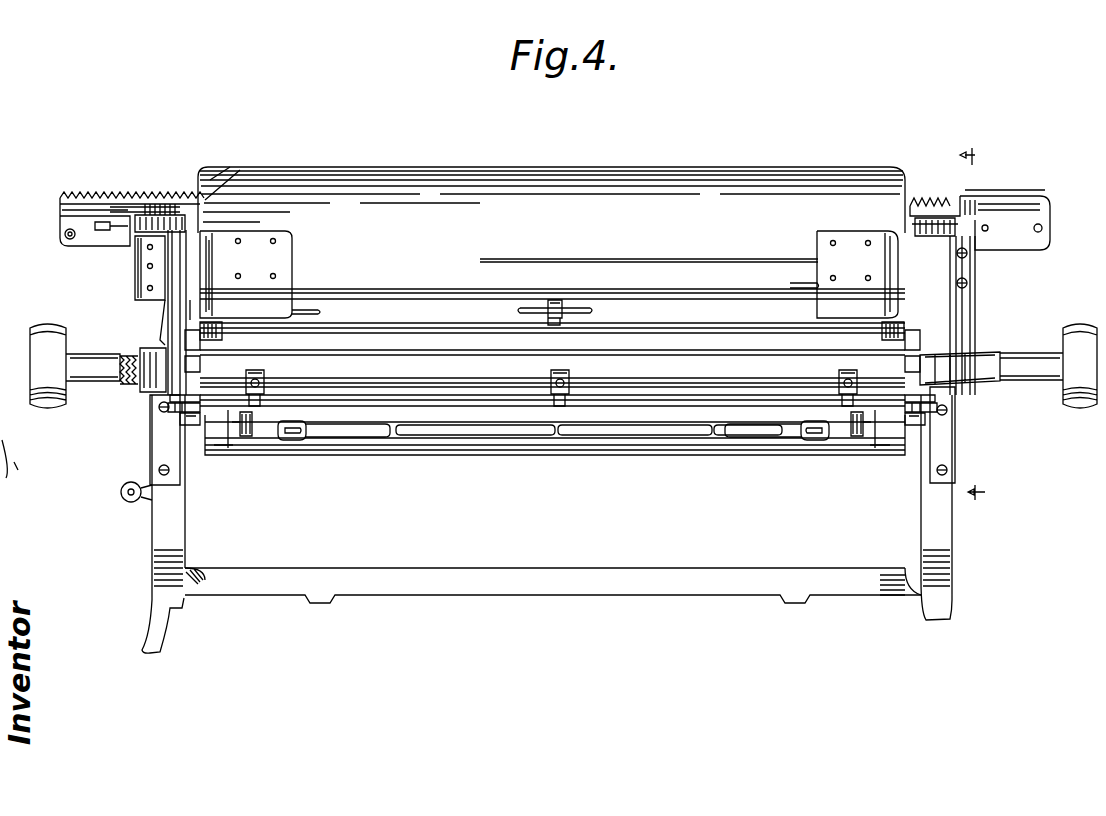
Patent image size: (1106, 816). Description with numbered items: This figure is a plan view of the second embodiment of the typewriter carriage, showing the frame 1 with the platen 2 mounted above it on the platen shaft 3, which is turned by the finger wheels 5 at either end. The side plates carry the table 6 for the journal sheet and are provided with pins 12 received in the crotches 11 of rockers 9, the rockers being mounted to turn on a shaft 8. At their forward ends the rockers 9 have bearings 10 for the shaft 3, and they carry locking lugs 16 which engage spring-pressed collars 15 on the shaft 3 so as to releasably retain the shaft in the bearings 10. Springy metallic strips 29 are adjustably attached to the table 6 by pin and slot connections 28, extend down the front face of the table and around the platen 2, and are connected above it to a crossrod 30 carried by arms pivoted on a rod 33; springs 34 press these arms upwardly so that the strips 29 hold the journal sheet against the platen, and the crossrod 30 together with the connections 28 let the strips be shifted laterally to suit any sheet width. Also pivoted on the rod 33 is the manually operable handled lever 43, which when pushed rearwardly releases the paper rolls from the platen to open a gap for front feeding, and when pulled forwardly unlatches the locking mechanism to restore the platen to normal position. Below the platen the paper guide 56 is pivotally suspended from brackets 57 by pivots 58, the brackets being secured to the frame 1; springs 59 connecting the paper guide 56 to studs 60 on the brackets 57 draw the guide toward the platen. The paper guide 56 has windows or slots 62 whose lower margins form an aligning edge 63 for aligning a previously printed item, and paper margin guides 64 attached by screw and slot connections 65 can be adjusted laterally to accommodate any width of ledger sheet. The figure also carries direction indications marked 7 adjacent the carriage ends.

The frame of the carriage 1 is at (505, 570).
The platen 2 is at (424, 338).
The platen shaft 3 is at (130, 358).
The finger wheels 5 is at (42, 325).
The table 6 is at (900, 487).
The direction 7 is at (972, 326).
The shaft 8 is at (134, 272).
The rockers 9 is at (165, 292).
The bearings 10 is at (182, 378).
The crotches 11 is at (178, 222).
The pins 12 is at (152, 210).
The spring-pressed collars 15 is at (138, 382).
The locking lugs 16 is at (120, 370).
The pin and slot connections 28 is at (556, 302).
The springy metallic strips 29 is at (266, 393).
The crossrod 30 is at (764, 392).
The rod 33 is at (790, 325).
The springs 34 is at (222, 338).
The handled lever 43 is at (985, 362).
The paper guide 56 is at (680, 446).
The brackets 57 is at (165, 450).
The pivots 58 is at (178, 408).
The springs 59 is at (182, 418).
The studs 60 is at (180, 399).
The windows or slots 62 is at (536, 444).
The aligning edge 63 is at (480, 442).
The paper margin guides 64 is at (298, 442).
The screw and slot connections 65 is at (246, 438).